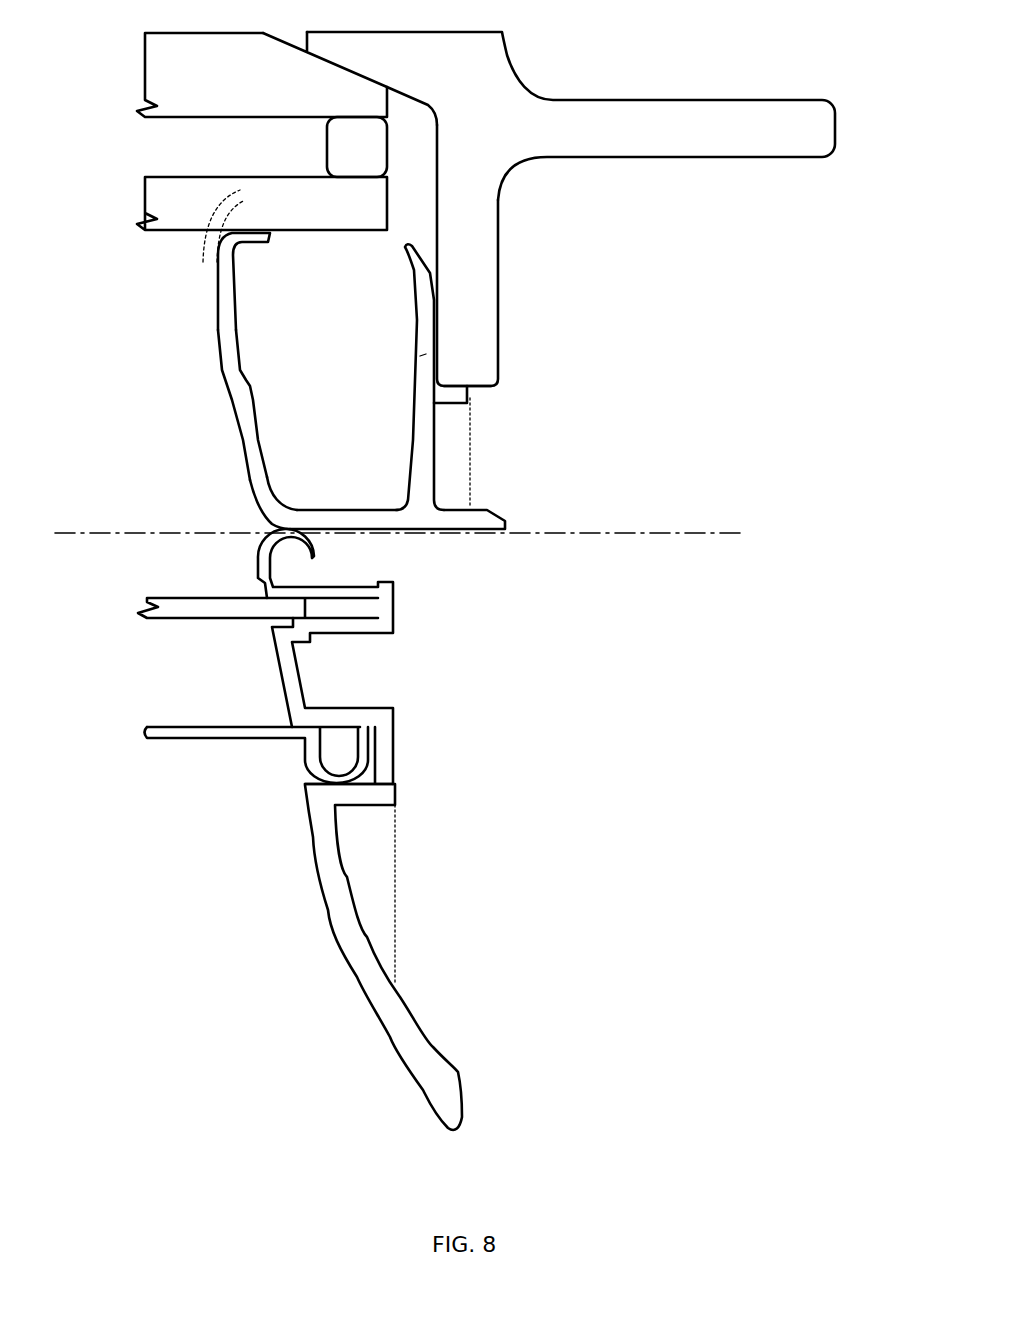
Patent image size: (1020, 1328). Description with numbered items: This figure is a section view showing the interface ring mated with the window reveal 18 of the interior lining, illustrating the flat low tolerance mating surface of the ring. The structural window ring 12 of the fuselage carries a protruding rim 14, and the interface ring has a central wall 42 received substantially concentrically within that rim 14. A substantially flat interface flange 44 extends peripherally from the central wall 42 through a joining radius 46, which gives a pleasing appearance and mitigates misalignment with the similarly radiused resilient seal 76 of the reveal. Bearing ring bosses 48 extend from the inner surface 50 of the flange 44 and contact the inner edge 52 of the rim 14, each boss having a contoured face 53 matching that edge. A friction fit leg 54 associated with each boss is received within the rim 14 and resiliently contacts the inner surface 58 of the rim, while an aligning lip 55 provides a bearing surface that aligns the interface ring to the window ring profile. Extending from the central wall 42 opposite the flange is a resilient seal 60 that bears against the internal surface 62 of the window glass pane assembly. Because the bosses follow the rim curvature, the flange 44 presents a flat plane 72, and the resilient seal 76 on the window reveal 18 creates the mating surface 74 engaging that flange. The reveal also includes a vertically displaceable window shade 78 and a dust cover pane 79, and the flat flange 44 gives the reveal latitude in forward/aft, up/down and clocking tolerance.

The structural window ring 12 is at (703, 127).
The rim 14 is at (468, 243).
The window reveal 18 is at (457, 1108).
The central wall 42 is at (192, 383).
The interface flange 44 is at (450, 534).
The joining radius 46 is at (243, 503).
The bearing ring boss 48 is at (473, 447).
The inner surface 50 is at (348, 510).
The inner edge 52 is at (477, 389).
The contoured face 53 is at (457, 385).
The friction fit leg 54 is at (417, 322).
The aligning lip 55 is at (438, 370).
The inner surface 58 is at (437, 193).
The resilient seal 60 is at (238, 313).
The internal surface 62 is at (177, 230).
The plane 72 is at (675, 532).
The mating surface 74 is at (293, 527).
The resilient seal 76 is at (290, 530).
The window shade 78 is at (217, 738).
The dust cover pane 79 is at (190, 618).